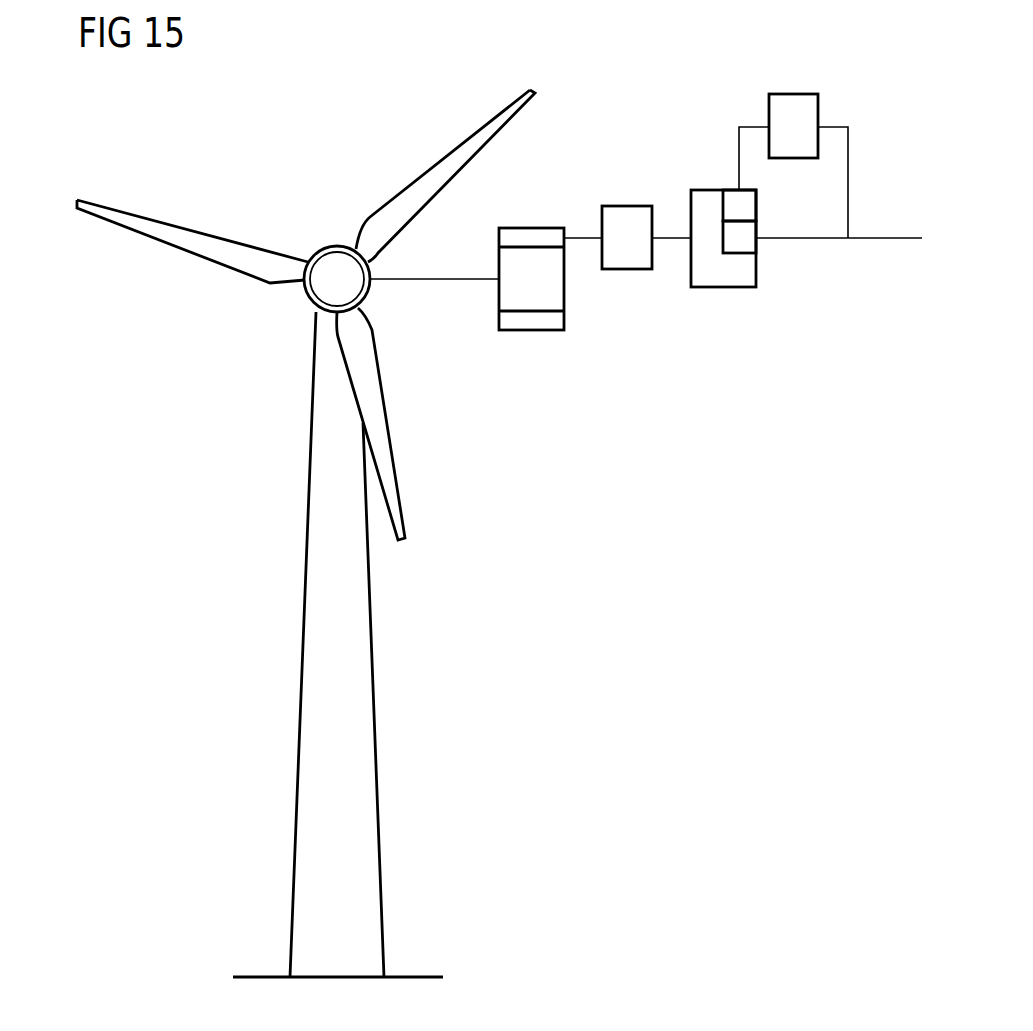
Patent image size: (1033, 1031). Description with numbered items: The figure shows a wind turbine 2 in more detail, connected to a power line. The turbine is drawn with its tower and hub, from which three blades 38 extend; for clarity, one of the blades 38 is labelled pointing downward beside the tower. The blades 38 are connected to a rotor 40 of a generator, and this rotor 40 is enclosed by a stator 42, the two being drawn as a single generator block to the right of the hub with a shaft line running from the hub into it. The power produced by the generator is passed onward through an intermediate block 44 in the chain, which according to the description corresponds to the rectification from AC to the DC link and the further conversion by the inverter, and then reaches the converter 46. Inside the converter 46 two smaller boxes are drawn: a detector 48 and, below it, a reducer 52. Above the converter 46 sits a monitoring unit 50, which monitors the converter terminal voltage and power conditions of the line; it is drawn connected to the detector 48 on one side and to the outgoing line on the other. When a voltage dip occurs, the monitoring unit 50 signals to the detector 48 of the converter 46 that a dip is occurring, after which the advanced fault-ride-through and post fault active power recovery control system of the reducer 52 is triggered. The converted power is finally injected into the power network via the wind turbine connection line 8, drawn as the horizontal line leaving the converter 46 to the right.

The wind turbine 2 is at (329, 143).
The blades 38 is at (380, 425).
The rotor 40 is at (555, 288).
The stator 42 is at (530, 325).
The converter 44 is at (627, 205).
The converter 46 is at (723, 288).
The detector 48 is at (748, 207).
The monitoring unit 50 is at (795, 93).
The reducer 52 is at (748, 245).
The wind turbine connection line 8 is at (887, 235).